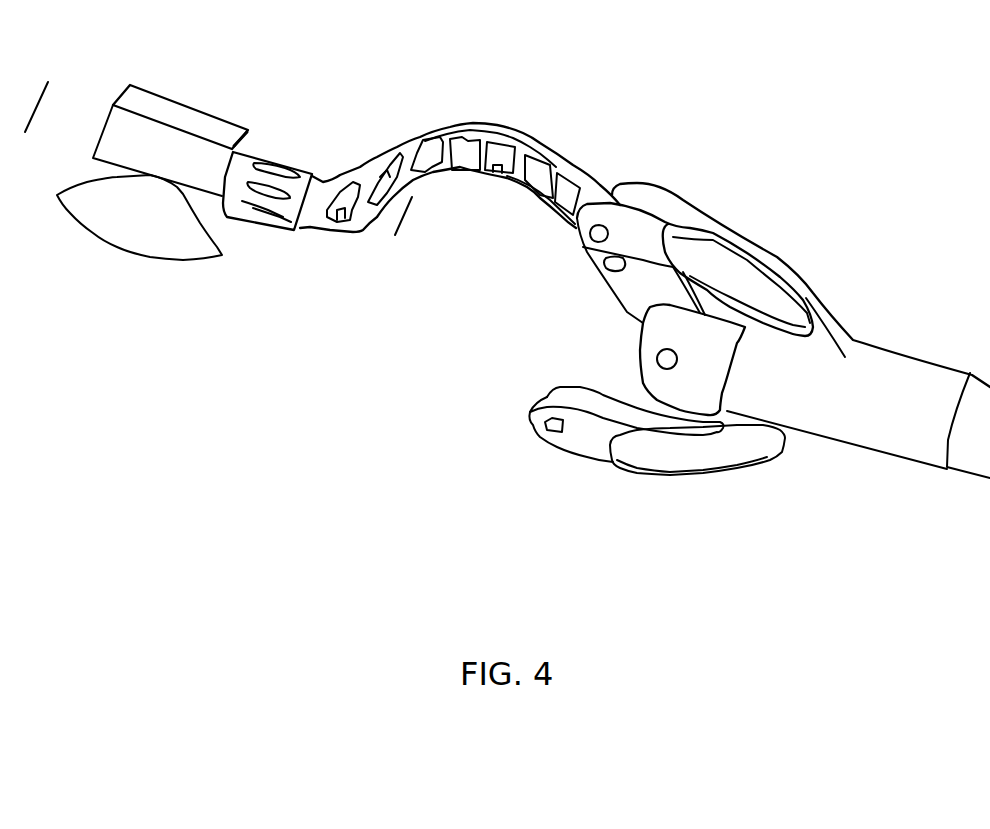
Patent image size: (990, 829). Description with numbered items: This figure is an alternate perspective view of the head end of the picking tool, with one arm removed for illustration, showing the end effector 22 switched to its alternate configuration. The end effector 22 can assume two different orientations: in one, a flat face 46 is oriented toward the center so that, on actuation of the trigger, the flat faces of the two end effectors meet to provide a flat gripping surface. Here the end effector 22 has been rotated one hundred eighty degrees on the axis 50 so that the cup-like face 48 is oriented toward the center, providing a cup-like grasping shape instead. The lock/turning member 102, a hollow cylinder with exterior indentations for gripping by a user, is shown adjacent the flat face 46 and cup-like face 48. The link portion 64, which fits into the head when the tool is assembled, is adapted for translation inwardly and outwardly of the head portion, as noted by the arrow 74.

The end effector 22 is at (303, 152).
The flat face 46 is at (212, 126).
The cup-like face 48 is at (115, 242).
The axis 50 is at (22, 97).
The link portion 64 is at (641, 360).
The arrow 74 is at (620, 343).
The lock/turning member 102 is at (278, 203).